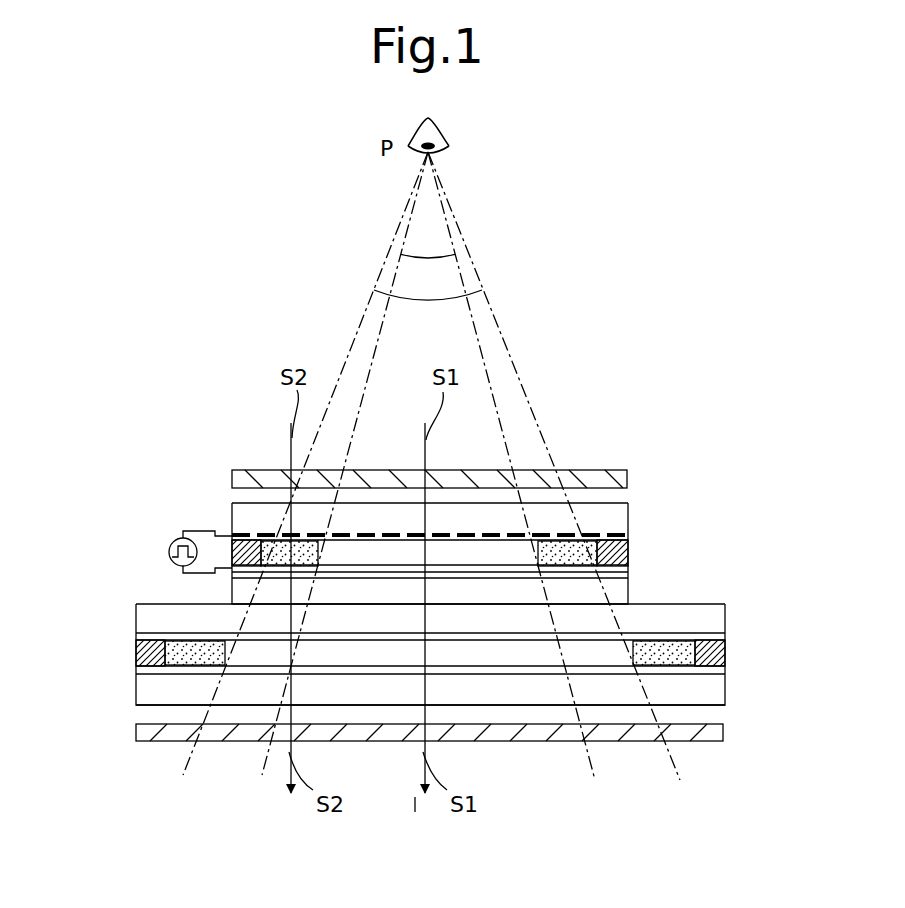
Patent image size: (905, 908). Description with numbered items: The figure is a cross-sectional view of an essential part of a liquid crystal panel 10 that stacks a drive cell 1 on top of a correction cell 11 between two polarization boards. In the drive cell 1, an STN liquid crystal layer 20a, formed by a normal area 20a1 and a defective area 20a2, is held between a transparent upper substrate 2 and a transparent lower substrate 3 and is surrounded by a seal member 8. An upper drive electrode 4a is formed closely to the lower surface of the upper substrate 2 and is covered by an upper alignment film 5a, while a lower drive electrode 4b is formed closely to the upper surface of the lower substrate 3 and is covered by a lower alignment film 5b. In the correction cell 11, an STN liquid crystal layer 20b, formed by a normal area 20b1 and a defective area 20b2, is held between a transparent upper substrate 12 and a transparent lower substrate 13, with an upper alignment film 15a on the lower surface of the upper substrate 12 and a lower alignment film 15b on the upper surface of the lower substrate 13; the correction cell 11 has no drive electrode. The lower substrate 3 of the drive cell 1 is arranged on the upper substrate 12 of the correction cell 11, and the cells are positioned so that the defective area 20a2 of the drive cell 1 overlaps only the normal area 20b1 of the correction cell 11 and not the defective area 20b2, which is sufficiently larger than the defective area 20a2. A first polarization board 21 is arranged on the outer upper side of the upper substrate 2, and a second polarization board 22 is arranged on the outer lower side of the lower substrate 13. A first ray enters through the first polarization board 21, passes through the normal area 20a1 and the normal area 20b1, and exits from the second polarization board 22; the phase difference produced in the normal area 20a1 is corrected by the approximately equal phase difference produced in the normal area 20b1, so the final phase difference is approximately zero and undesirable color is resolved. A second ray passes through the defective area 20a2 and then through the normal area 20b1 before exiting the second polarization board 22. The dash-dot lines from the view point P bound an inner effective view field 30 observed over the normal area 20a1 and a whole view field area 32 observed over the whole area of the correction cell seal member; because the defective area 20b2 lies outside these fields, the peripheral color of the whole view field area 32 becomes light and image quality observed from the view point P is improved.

The liquid crystal panel 10 is at (172, 468).
The drive cell 1 is at (162, 505).
The correction cell 11 is at (130, 602).
The upper substrate 2 is at (602, 515).
The lower substrate 3 is at (633, 598).
The upper drive electrode 4a is at (508, 552).
The lower drive electrode 4b is at (640, 581).
The upper alignment film 5a is at (598, 533).
The lower alignment film 5b is at (634, 590).
The seal member 8 is at (630, 553).
The upper substrate 12 is at (712, 622).
The lower substrate 13 is at (712, 693).
The upper alignment film 15a is at (700, 703).
The lower alignment film 15b is at (657, 672).
The STN liquid crystal layer 20a is at (492, 463).
The normal area 20a1 is at (478, 532).
The defective area 20a2 is at (558, 555).
The STN liquid crystal layer 20b is at (430, 755).
The normal area 20b1 is at (533, 655).
The defective area 20b2 is at (623, 653).
The first polarization board 21 is at (248, 468).
The second polarization board 22 is at (150, 741).
The first beam angle 30 is at (432, 257).
The whole view field area 32 is at (425, 293).